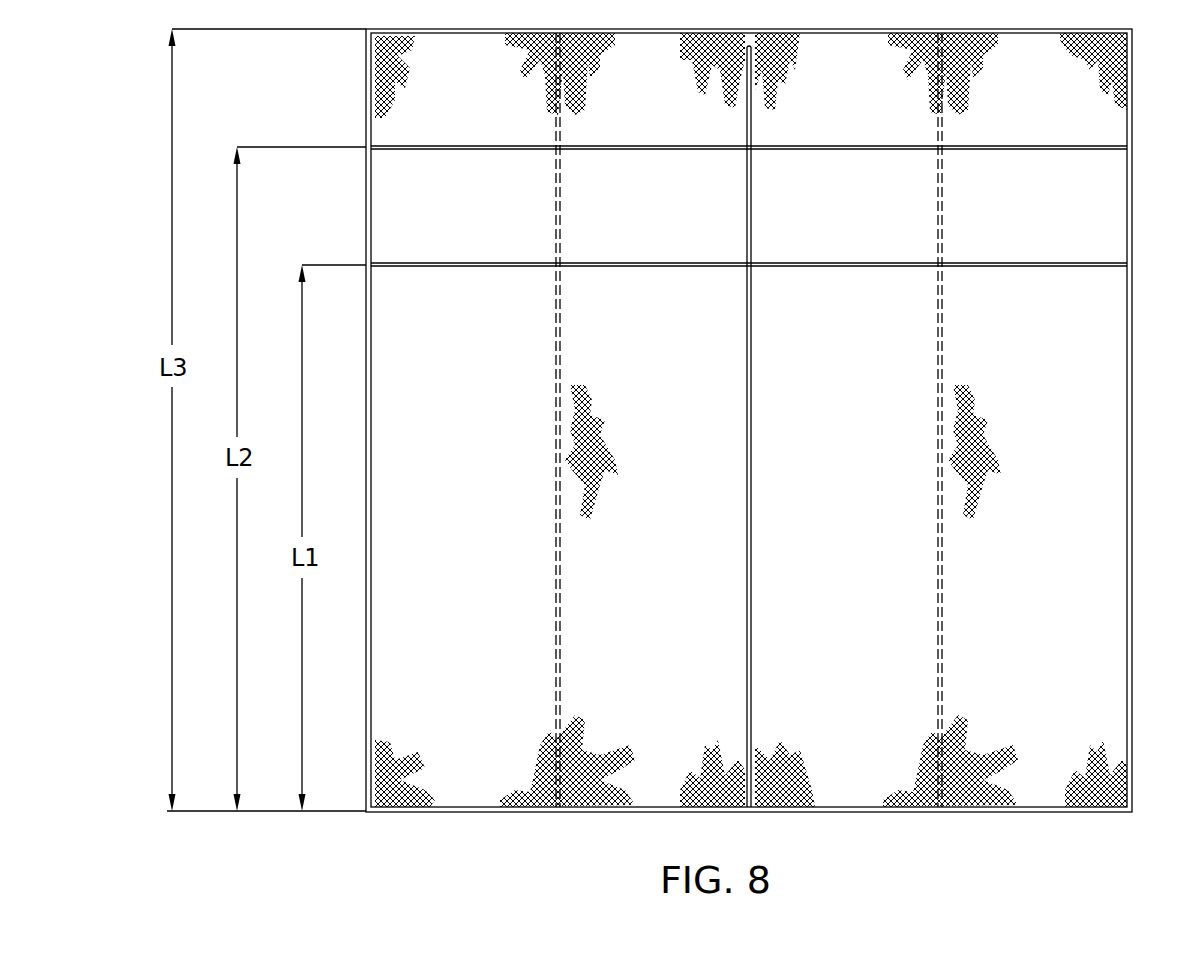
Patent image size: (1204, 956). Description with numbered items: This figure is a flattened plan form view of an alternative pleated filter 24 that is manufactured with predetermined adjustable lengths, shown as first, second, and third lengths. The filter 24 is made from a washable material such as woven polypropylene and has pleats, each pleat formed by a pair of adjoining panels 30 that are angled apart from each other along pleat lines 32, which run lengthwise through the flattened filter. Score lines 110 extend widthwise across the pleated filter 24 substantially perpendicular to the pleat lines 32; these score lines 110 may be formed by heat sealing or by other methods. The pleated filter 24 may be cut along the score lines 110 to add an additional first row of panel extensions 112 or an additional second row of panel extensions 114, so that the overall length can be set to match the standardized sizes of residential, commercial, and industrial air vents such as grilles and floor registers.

The pleated filter 24 is at (1133, 464).
The adjoining panels 30 is at (485, 466).
The pleat lines 32 is at (753, 618).
The score lines 110 is at (828, 146).
The first row of panel extensions 112 is at (1000, 211).
The second row of panel extensions 114 is at (1000, 113).